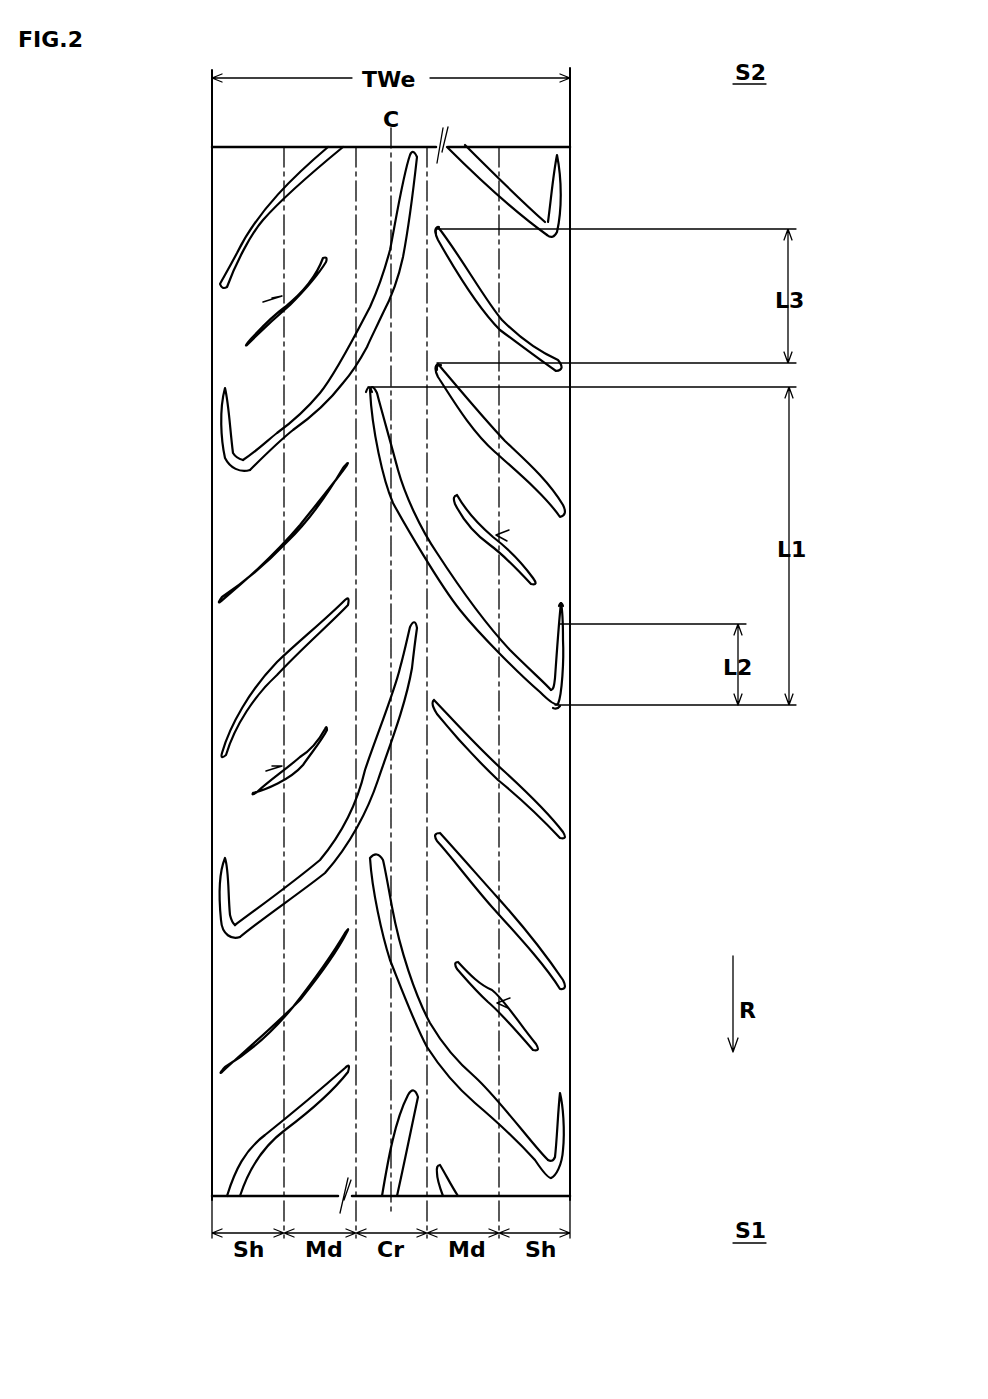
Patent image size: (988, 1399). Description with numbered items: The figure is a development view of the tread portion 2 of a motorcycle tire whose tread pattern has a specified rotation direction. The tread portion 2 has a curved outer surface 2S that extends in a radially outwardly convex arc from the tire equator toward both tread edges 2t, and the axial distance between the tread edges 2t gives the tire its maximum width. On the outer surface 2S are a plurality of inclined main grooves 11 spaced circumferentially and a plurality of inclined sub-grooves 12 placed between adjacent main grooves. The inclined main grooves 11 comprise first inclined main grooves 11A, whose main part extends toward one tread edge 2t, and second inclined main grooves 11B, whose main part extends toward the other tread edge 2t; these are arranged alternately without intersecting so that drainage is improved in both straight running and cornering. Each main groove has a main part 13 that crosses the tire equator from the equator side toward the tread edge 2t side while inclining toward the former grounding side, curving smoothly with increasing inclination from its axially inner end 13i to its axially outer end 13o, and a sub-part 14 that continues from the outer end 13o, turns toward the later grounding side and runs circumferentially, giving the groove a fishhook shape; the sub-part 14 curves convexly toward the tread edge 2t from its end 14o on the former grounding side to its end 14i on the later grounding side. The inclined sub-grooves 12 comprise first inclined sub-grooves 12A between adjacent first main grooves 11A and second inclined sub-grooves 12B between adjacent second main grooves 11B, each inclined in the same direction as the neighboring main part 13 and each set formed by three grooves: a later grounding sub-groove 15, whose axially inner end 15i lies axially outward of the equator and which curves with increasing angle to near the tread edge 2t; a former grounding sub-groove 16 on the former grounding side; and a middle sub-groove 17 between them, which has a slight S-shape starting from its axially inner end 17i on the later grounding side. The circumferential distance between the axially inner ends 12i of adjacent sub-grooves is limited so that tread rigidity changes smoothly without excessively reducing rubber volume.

The tread portion 2 is at (617, 125).
The tread edge 2t is at (212, 229).
The outer surface 2S is at (543, 285).
The inclined main groove 11 is at (411, 641).
The first inclined main groove 11A is at (487, 180).
The second inclined main groove 11B is at (152, 355).
The inclined sub-groove 12 is at (411, 671).
The first inclined sub-groove 12A is at (662, 783).
The second inclined sub-groove 12B is at (152, 620).
The axially inner end of inclined sub-groove 12i is at (438, 228).
The main part 13 is at (307, 397).
The axially inner end of main part 13i is at (368, 387).
The axially outer end of main part 13o is at (556, 708).
The sub-part 14 is at (224, 437).
The end of sub-part on later grounding side 14i is at (563, 603).
The end of sub-part on former grounding side 14o is at (556, 707).
The later grounding sub-groove 15 is at (282, 558).
The axially inner end of later grounding sub-groove 15i is at (437, 230).
The former grounding sub-groove 16 is at (253, 793).
The middle sub-groove 17 is at (267, 685).
The axially inner end of middle sub-groove 17i is at (439, 367).